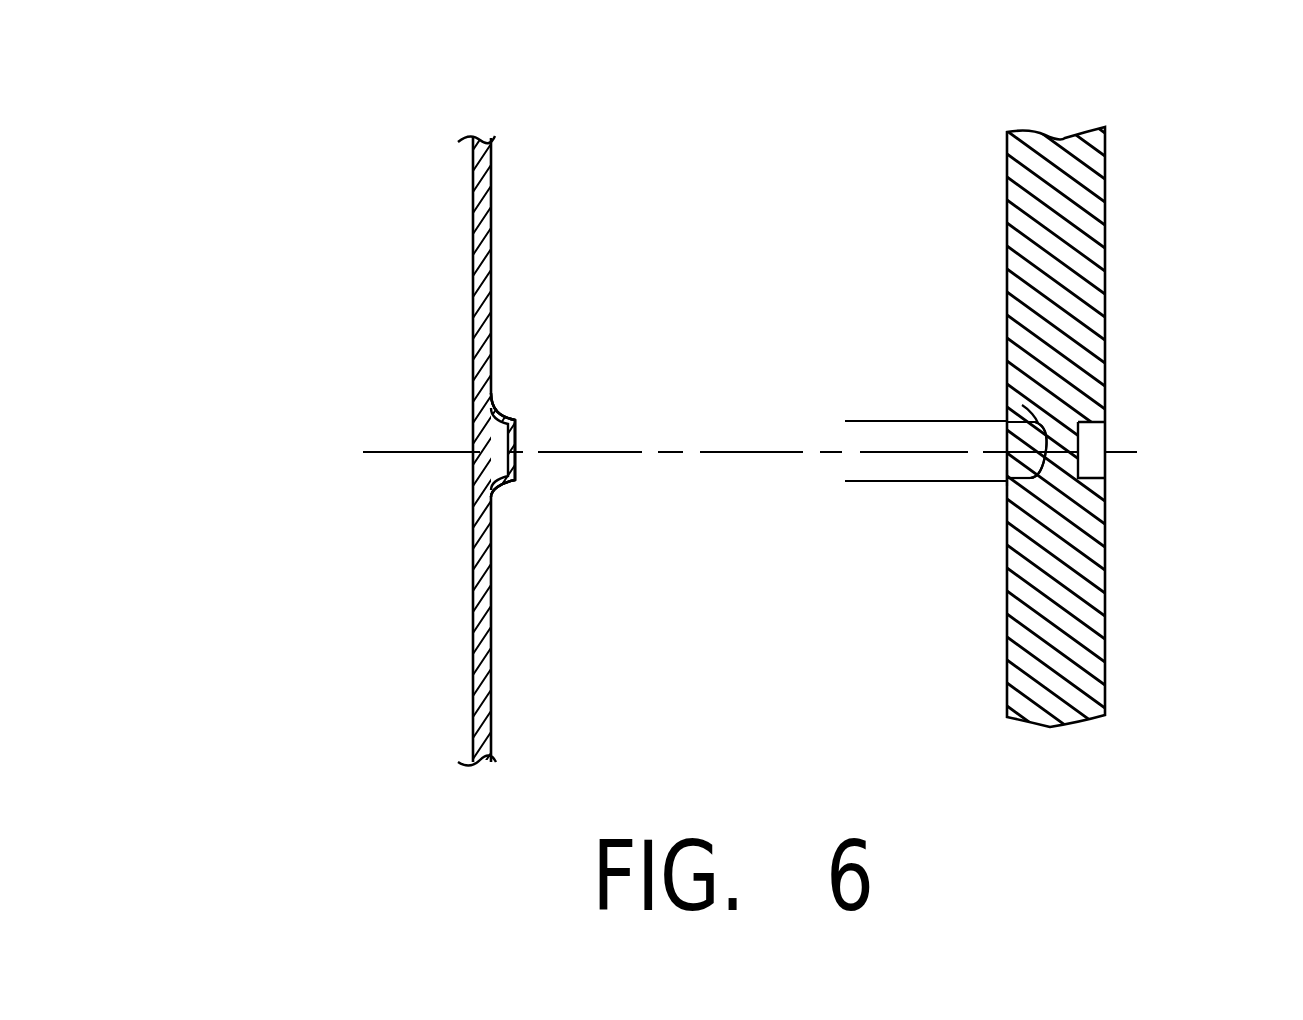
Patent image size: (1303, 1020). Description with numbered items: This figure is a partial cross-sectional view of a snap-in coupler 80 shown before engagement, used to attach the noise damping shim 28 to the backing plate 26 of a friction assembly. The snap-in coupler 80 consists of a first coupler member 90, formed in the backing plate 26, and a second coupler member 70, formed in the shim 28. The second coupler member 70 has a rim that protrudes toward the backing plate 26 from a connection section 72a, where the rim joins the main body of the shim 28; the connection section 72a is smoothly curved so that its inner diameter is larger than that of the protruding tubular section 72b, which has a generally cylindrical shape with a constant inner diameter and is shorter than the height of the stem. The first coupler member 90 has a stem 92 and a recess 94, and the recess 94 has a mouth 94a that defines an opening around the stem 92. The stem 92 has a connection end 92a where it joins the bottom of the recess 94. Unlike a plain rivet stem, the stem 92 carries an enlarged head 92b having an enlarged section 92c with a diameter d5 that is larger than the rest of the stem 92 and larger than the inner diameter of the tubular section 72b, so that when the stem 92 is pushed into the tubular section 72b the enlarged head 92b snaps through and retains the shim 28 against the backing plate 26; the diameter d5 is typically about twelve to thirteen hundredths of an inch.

The backing plate 26 is at (1070, 172).
The noise damping shim 28 is at (478, 192).
The second coupler member 70 is at (547, 393).
The connection section 72a is at (478, 490).
The tubular section 72b is at (493, 490).
The snap-in coupler 80 is at (362, 275).
The first coupler member 90 is at (958, 226).
The stem 92 is at (1007, 423).
The connection end 92a is at (1022, 490).
The enlarged head 92b is at (1005, 480).
The enlarged section 92c is at (1005, 488).
The recess 94 is at (1022, 405).
The mouth 94a is at (1038, 423).
The diameter of enlarged section d5 is at (866, 375).